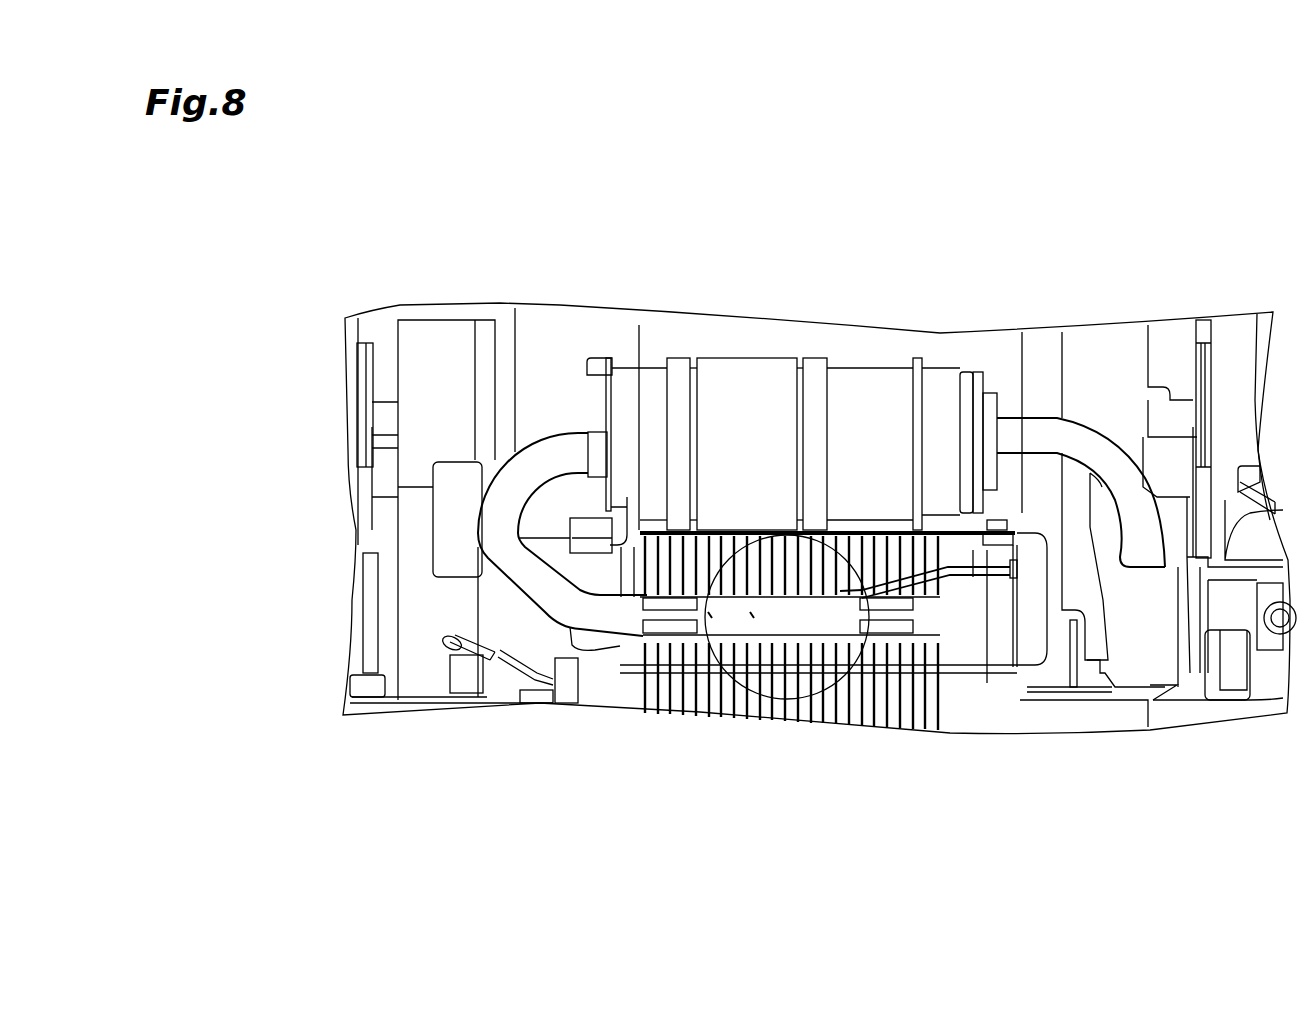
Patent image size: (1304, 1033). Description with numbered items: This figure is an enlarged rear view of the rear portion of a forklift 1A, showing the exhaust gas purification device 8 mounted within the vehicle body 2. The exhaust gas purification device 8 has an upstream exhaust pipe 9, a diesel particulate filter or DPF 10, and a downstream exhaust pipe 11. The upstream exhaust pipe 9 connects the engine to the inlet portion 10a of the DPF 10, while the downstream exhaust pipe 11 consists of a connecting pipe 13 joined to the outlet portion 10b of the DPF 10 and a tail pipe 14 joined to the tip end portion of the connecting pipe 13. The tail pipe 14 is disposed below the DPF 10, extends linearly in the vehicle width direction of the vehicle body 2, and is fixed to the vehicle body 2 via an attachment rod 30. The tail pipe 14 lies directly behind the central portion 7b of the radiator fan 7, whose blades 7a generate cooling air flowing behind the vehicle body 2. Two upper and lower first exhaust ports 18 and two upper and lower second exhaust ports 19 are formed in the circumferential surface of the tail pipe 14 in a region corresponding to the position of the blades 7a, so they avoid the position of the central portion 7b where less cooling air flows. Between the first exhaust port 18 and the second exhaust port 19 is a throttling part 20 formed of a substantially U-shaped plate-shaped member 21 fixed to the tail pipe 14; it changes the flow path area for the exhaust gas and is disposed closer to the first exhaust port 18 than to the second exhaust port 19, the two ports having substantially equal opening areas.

The lighting device 1A is at (462, 253).
The vehicle body 2 is at (1115, 316).
The radiator fan 7 is at (717, 717).
The blade 7a is at (568, 702).
The central portion 7b is at (767, 700).
The exhaust gas purification device 8 is at (755, 350).
The upstream exhaust pipe 9 is at (1045, 433).
The diesel particulate filter (DPF) 10 is at (883, 385).
The inlet portion 10a is at (990, 430).
The outlet portion 10b is at (622, 385).
The downstream exhaust pipe 11 is at (563, 422).
The connecting pipe 13 is at (490, 510).
The tail pipe 14 is at (837, 623).
The first exhaust port 18 is at (645, 633).
The second exhaust port 19 is at (880, 640).
The throttling part 20 is at (730, 539).
The plate-shaped member 21 is at (747, 615).
The attachment rod 30 is at (1000, 577).